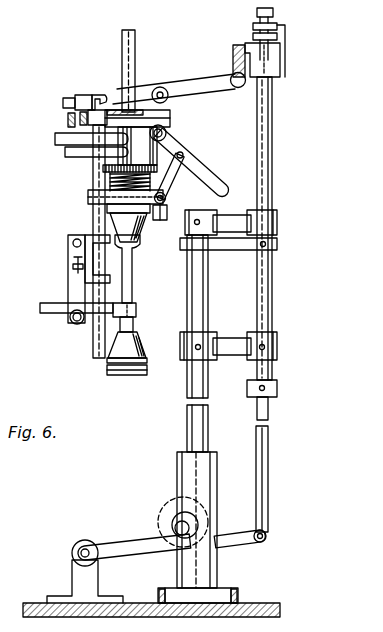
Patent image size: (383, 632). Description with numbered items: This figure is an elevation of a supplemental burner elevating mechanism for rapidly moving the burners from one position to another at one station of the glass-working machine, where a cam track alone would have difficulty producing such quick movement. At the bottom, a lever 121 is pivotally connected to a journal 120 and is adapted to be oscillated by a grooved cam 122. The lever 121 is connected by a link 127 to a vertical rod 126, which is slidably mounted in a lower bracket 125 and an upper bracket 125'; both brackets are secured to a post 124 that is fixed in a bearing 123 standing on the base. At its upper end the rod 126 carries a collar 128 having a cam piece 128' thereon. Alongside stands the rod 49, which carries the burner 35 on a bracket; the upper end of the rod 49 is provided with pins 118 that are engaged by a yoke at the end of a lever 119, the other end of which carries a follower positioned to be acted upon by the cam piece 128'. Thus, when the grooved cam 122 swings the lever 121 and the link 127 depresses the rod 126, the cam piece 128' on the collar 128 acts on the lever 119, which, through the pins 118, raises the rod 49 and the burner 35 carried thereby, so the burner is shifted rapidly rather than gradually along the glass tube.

The burner 35 is at (136, 306).
The rod 49 is at (93, 347).
The pins 118 is at (100, 96).
The lever 119 is at (204, 88).
The journal 120 is at (75, 577).
The lever 121 is at (122, 541).
The grooved cam 122 is at (173, 500).
The bearing 123 is at (218, 567).
The post 124 is at (190, 415).
The bracket 125 is at (192, 353).
The bracket 125' is at (209, 231).
The rod 126 is at (273, 297).
The link 127 is at (267, 462).
The collar 128 is at (284, 51).
The cam piece 128' is at (214, 61).